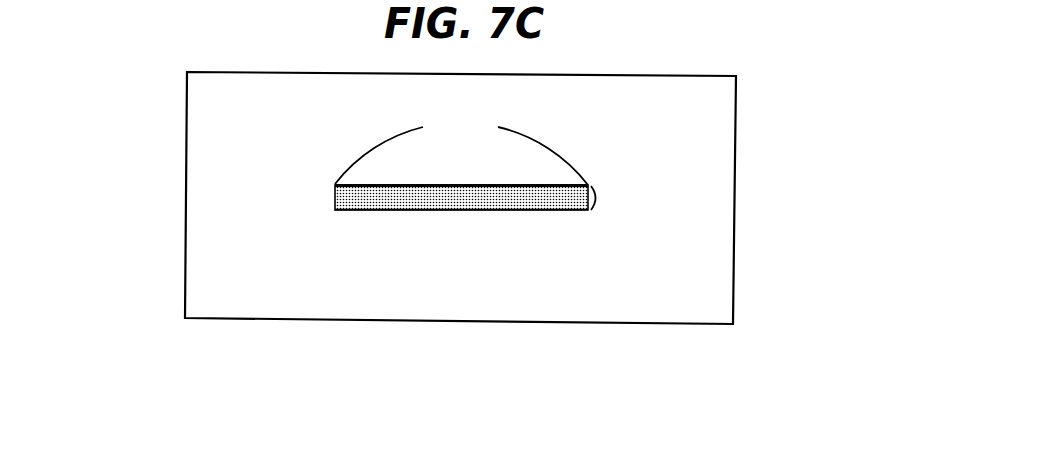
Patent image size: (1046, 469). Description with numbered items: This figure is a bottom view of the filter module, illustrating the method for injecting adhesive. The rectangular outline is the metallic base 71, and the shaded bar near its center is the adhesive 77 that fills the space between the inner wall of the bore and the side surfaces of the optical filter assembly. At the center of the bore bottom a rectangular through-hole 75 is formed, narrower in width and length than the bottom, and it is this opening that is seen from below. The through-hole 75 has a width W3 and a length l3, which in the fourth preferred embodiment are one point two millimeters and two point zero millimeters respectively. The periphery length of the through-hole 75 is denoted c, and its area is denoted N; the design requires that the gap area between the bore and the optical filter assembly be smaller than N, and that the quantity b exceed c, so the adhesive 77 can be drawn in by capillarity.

The metallic base 71 is at (710, 307).
The through-hole 75 is at (355, 210).
The adhesive 77 is at (420, 210).
The area of the through-hole N is at (500, 203).
The periphery length of the through-hole c is at (556, 207).
The length of the through-hole l3 is at (463, 126).
The width of the through-hole W3 is at (613, 199).